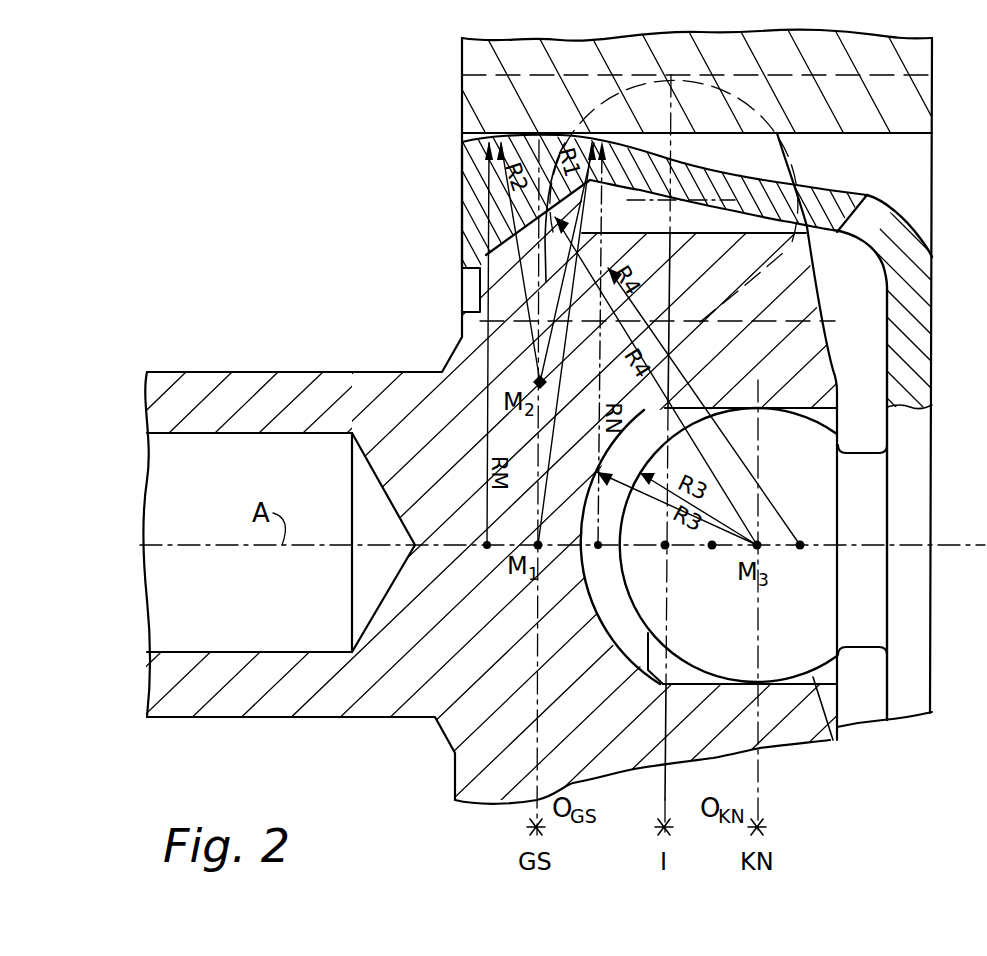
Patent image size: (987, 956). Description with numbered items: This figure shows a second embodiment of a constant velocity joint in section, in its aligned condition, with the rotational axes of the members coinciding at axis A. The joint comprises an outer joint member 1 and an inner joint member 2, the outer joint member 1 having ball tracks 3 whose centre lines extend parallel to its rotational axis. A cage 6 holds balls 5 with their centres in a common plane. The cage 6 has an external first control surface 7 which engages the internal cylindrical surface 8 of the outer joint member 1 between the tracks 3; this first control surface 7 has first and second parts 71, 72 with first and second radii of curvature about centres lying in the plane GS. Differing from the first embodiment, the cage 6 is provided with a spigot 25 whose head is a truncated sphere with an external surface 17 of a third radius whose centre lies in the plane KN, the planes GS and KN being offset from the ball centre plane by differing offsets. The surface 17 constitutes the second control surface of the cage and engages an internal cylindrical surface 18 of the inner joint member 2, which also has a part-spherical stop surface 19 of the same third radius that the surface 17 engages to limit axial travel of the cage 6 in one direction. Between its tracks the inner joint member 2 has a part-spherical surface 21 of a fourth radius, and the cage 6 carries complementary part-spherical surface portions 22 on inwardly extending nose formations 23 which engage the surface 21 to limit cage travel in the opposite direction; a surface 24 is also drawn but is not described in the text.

The outer joint member 1 is at (480, 51).
The inner joint member 2 is at (327, 387).
The ball tracks 3 is at (890, 103).
The balls 5 is at (763, 163).
The cage 6 is at (803, 183).
The first control surface 7 is at (537, 130).
The first part of first control surface 71 is at (596, 135).
The second part of first control surface 72 is at (462, 128).
The internal cylindrical surface 8 is at (893, 148).
The external surface 17 is at (833, 740).
The internal cylindrical surface 18 is at (697, 686).
The part-spherical stop surface 19 is at (613, 628).
The part-spherical surface 21 is at (545, 284).
The part-spherical surface portions 22 is at (490, 254).
The nose formations 23 is at (462, 193).
The inner spherical surface 24 is at (887, 233).
The spigot 25 is at (863, 613).